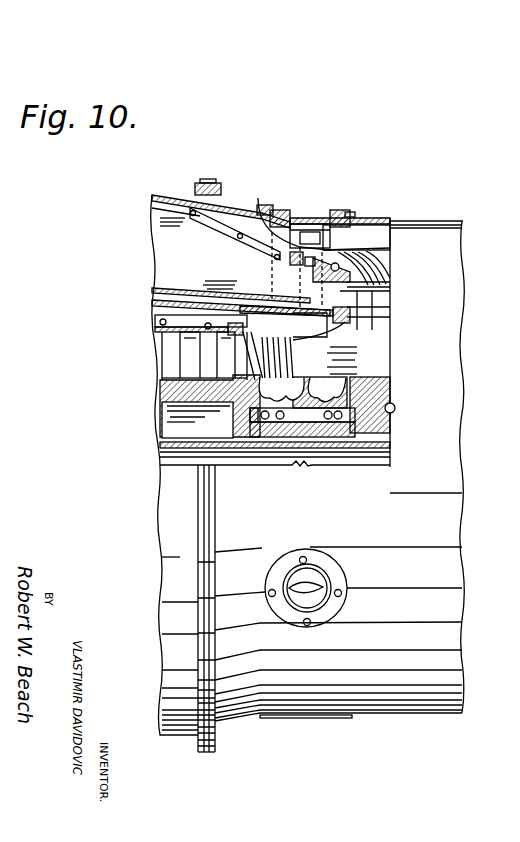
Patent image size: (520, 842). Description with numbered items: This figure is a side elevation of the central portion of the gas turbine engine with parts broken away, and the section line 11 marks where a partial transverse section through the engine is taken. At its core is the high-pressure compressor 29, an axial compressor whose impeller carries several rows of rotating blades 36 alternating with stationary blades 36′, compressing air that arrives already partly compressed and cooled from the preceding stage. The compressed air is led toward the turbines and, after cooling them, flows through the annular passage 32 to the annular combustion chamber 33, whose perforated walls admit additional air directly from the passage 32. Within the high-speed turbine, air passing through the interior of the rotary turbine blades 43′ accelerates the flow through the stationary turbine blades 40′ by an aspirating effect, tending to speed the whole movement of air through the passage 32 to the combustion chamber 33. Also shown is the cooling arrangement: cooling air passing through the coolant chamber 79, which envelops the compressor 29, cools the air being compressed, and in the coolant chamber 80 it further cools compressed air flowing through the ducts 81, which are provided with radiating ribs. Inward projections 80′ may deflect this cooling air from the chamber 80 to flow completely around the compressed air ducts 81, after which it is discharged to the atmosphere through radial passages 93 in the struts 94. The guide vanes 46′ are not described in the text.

The section line 11— 11 is at (305, 203).
The high-pressure compressor 29 is at (172, 518).
The annular passage 32 is at (372, 245).
The annular combustion chamber 33 is at (187, 272).
The rotating blades 36 is at (184, 357).
The stationary blades 36' is at (178, 355).
The stationary turbine blades 40' is at (385, 310).
The rotary turbine blades 43' is at (401, 304).
The guide vanes 46' is at (383, 265).
The coolant chamber 79 is at (155, 311).
The coolant chamber 80 is at (299, 377).
The inward projections 80' is at (295, 294).
The compressed air ducts 81 is at (292, 466).
The radial passages 93 is at (310, 228).
The struts 94 is at (258, 210).